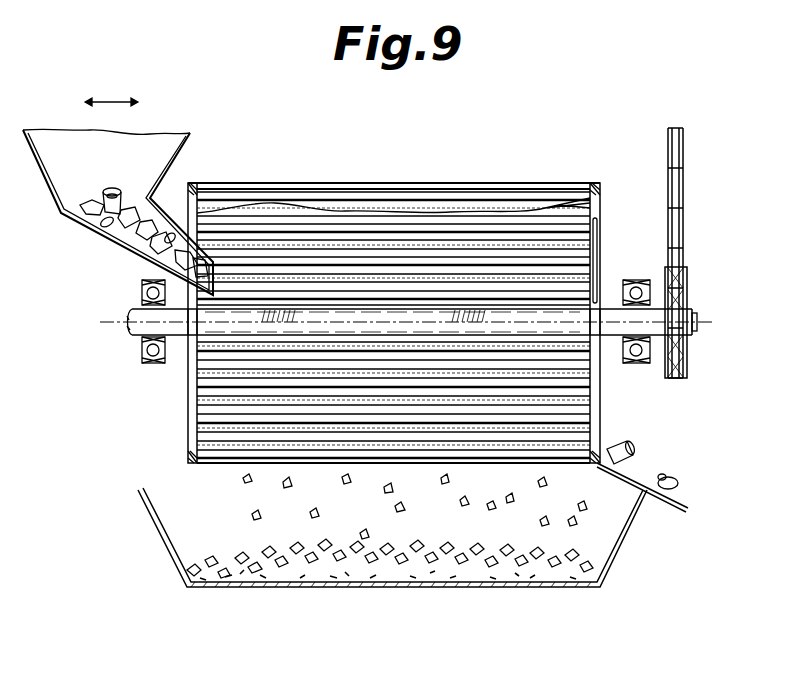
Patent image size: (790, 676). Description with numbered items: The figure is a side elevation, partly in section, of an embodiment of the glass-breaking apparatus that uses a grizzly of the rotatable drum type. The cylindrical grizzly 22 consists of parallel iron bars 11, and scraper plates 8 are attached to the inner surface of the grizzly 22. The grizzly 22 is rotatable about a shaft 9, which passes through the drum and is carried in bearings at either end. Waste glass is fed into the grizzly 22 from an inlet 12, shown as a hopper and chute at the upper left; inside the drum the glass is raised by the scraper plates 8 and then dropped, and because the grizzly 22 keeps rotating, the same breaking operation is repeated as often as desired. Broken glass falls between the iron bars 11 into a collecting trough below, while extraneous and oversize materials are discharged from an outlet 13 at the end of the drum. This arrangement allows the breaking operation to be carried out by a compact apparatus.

The scraper plates 8 is at (527, 226).
The shaft 9 is at (175, 330).
The parallel iron bars 11 is at (444, 228).
The inlet 12 is at (118, 196).
The outlet 13 is at (591, 218).
The cylindrical grizzly 22 is at (232, 451).